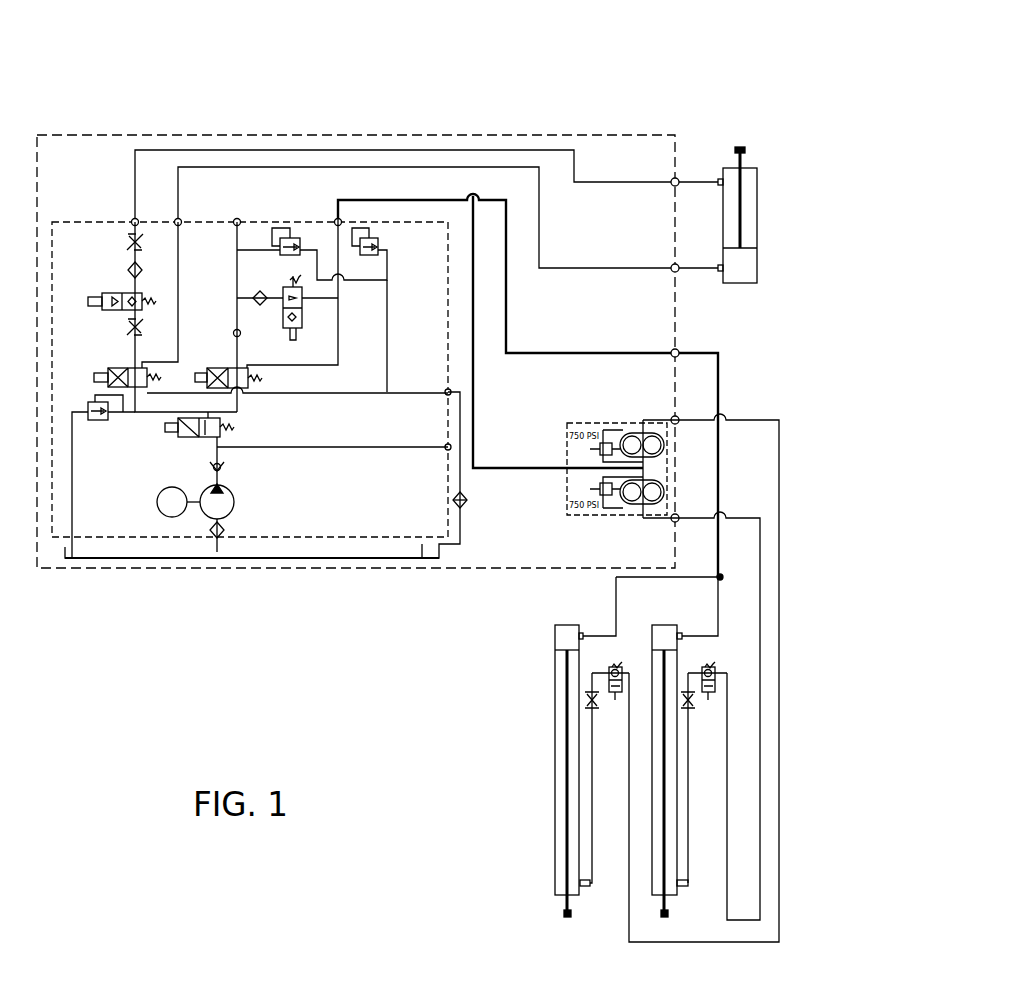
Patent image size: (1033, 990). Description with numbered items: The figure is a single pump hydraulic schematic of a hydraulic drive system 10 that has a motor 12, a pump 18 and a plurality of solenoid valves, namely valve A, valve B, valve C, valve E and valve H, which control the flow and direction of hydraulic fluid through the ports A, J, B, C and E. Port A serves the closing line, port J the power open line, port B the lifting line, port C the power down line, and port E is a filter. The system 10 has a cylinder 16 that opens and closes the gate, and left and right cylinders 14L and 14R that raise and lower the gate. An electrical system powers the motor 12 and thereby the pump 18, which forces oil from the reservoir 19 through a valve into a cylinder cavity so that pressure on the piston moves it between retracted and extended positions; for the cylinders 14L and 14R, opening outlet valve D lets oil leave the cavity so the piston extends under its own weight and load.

The hydraulic drive system 10 is at (435, 356).
The motor 12 is at (165, 517).
The left cylinder 14L is at (560, 632).
The right cylinder 14R is at (670, 632).
The cylinder 16 is at (750, 268).
The pump 18 is at (241, 515).
The reservoir 19 is at (323, 553).